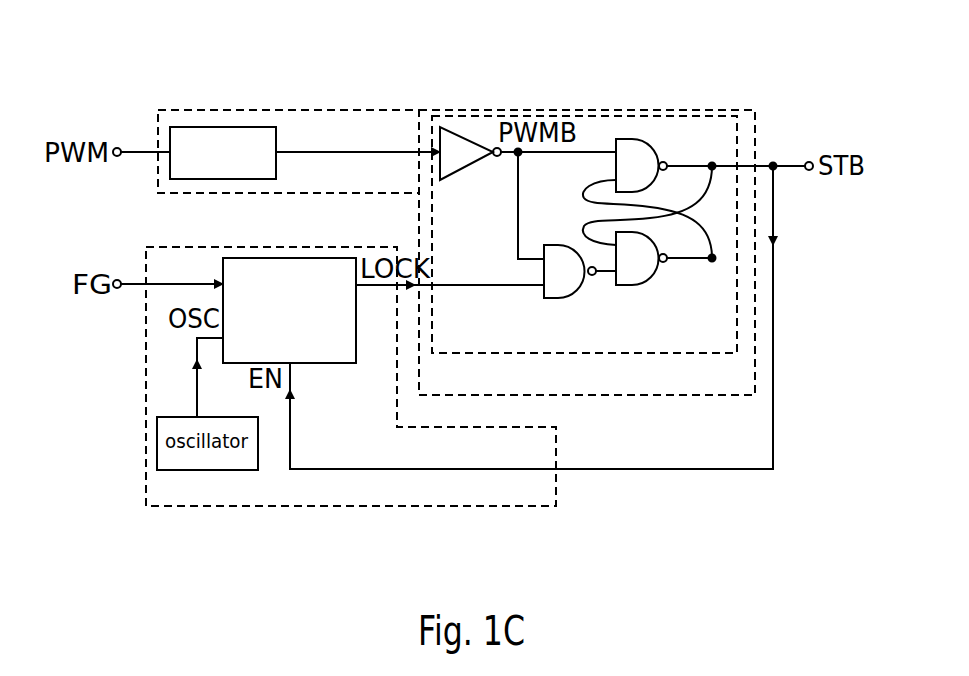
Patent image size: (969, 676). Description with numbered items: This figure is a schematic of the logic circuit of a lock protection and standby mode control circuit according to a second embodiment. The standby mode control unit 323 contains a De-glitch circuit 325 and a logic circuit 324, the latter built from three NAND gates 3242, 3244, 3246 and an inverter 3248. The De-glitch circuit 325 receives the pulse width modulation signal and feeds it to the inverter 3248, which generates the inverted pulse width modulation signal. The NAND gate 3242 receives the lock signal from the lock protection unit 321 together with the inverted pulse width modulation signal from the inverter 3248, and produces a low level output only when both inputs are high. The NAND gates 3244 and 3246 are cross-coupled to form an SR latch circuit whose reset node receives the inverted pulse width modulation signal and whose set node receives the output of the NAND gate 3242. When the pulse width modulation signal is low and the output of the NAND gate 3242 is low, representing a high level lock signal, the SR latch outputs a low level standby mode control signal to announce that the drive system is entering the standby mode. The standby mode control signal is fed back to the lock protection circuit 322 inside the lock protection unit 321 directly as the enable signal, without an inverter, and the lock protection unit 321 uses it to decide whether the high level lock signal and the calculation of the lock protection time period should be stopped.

The lock protection unit 321 is at (146, 376).
The lock protection circuit 322 is at (302, 364).
The standby mode control unit 323 is at (240, 110).
The logic circuit 324 is at (465, 110).
The De-glitch circuit 325 is at (236, 179).
The NAND gate 3242 is at (574, 298).
The NAND gate 3244 is at (645, 138).
The NAND gate 3246 is at (648, 286).
The inverter 3248 is at (466, 170).